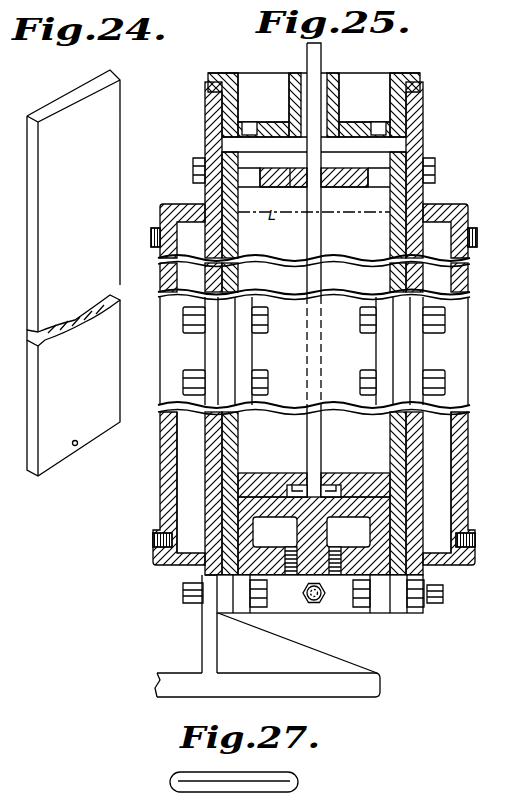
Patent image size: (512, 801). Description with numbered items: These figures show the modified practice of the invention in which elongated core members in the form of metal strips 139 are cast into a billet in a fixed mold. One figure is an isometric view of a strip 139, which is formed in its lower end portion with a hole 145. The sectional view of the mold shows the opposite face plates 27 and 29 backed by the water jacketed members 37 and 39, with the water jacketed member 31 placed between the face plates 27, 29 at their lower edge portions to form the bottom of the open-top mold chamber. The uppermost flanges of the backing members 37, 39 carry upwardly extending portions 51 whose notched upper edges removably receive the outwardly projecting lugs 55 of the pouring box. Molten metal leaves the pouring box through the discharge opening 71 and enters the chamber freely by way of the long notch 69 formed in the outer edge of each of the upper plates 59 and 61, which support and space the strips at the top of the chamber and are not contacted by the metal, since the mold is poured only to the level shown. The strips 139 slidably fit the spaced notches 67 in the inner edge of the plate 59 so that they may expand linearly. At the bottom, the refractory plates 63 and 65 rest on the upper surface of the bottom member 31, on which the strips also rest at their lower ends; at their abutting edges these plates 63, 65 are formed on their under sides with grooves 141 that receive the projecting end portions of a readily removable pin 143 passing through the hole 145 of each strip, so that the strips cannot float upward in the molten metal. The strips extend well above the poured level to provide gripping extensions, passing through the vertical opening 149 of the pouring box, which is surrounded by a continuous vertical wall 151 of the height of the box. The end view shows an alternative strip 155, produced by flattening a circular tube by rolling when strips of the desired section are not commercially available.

In FIG. 24, the strip 139 is at (112, 206).
In FIG. 25, the strip 139 is at (320, 236).
In FIG. 24, the hole 145 is at (77, 446).
In FIG. 25, the lug 55 is at (222, 78).
In FIG. 25, the vertical wall 151 is at (296, 106).
In FIG. 25, the vertical opening 149 is at (314, 97).
In FIG. 25, the discharge opening 71 is at (240, 134).
In FIG. 25, the upwardly extending portion 51 is at (210, 121).
In FIG. 25, the plate 61 is at (314, 363).
In FIG. 25, the notch 67 is at (297, 178).
In FIG. 25, the long notch 69 is at (257, 187).
In FIG. 25, the plate 59 is at (288, 180).
In FIG. 25, the water jacketed member 37 is at (160, 506).
In FIG. 25, the water jacketed member 39 is at (455, 498).
In FIG. 25, the face plate 27 is at (238, 276).
In FIG. 25, the face plate 29 is at (392, 276).
In FIG. 25, the plate 63 is at (262, 480).
In FIG. 25, the plate 65 is at (366, 482).
In FIG. 25, the pin 143 is at (300, 482).
In FIG. 25, the groove 141 is at (348, 480).
In FIG. 25, the water jacketed member 31 is at (356, 507).
In FIG. 27, the strip 155 is at (185, 772).